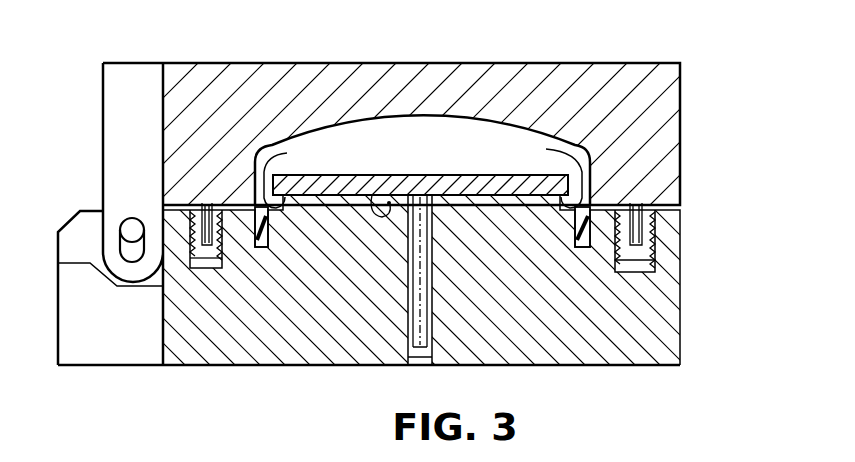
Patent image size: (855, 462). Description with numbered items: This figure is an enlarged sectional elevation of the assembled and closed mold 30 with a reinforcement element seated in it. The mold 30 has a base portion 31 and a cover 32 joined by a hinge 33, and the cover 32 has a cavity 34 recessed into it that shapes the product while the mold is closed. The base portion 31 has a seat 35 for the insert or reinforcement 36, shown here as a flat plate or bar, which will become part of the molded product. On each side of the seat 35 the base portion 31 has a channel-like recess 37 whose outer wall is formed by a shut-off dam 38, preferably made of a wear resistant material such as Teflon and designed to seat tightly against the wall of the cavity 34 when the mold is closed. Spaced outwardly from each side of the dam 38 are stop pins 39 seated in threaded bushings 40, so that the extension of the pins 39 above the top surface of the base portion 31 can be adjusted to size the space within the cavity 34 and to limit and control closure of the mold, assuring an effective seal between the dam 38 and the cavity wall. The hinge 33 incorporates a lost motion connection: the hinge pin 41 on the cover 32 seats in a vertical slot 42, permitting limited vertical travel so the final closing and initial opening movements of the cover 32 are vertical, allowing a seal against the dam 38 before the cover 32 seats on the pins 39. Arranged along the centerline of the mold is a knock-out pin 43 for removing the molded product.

The mold 30 is at (693, 160).
The base portion 31 is at (682, 313).
The cover 32 is at (682, 84).
The hinge 33 is at (92, 251).
The cavity 34 is at (451, 129).
The seat 35 is at (372, 195).
The insert or reinforcement 36 is at (479, 175).
The channel-like recess 37 is at (287, 153).
The shut-off dam 38 is at (546, 149).
The stop pin 39 is at (209, 207).
The threaded bushing 40 is at (656, 242).
The hinge pin 41 is at (132, 218).
The vertical slot 42 is at (132, 262).
The knock-out pin 43 is at (407, 322).